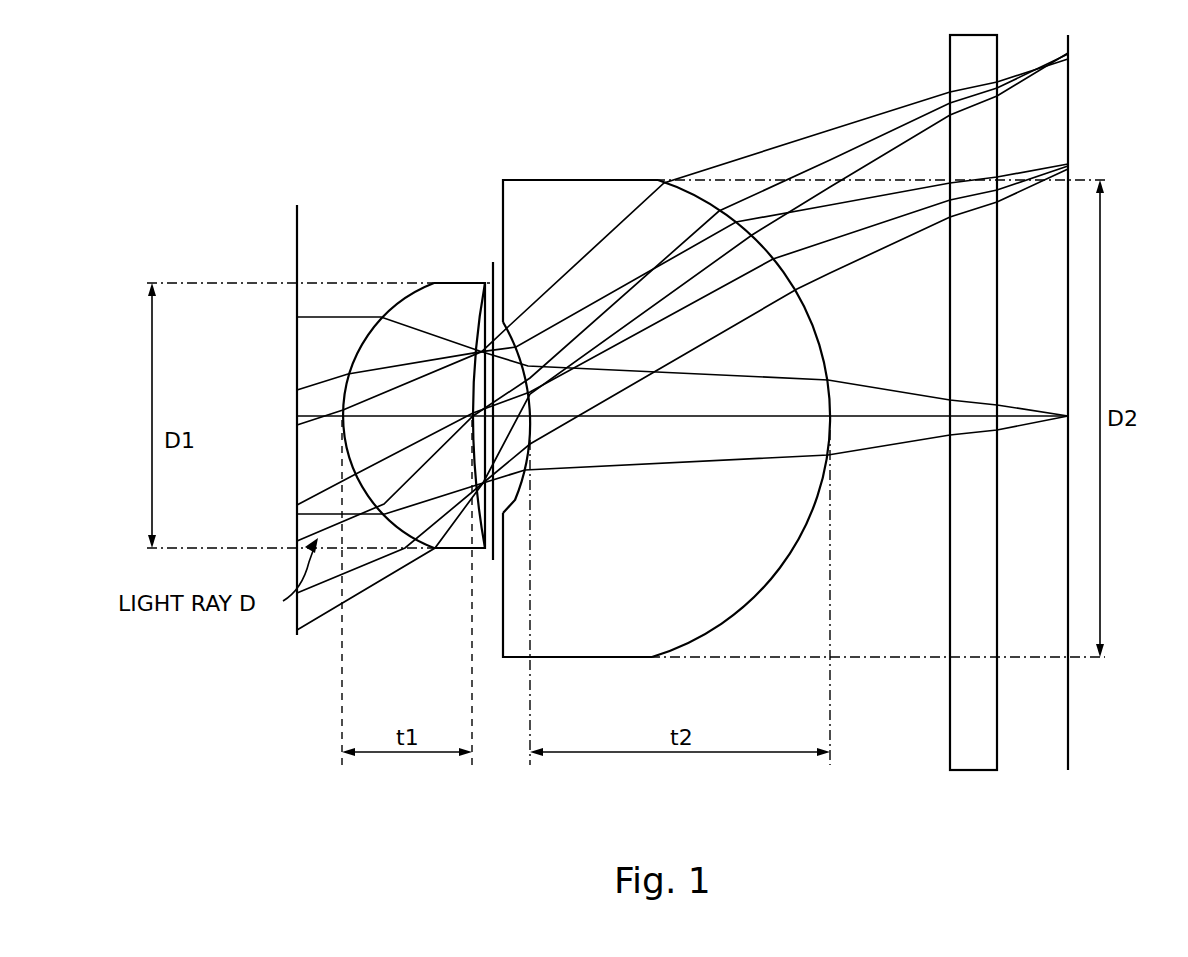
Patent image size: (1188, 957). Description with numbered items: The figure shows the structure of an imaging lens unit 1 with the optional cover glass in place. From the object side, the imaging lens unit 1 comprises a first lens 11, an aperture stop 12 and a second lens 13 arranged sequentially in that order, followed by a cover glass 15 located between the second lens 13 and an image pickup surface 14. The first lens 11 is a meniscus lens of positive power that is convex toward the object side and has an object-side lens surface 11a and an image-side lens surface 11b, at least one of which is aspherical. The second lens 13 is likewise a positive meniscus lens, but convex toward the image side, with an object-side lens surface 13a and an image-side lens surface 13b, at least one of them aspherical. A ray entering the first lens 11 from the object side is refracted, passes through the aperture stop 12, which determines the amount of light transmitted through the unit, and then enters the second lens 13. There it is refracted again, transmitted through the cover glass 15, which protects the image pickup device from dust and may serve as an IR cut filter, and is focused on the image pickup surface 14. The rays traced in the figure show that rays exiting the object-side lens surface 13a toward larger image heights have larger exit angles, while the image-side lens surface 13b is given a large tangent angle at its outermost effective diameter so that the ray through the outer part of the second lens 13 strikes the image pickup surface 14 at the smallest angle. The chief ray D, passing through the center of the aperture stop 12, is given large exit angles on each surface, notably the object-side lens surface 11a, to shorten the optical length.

The imaging lens unit 1 is at (772, 81).
The first lens 11 is at (433, 297).
The object-side lens surface 11a is at (362, 336).
The image-side lens surface 11b is at (484, 540).
The aperture stop 12 is at (493, 268).
The second lens 13 is at (556, 198).
The object-side lens surface 13a is at (515, 499).
The image-side lens surface 13b is at (815, 527).
The image pickup surface 14 is at (1069, 98).
The cover glass 15 is at (970, 710).